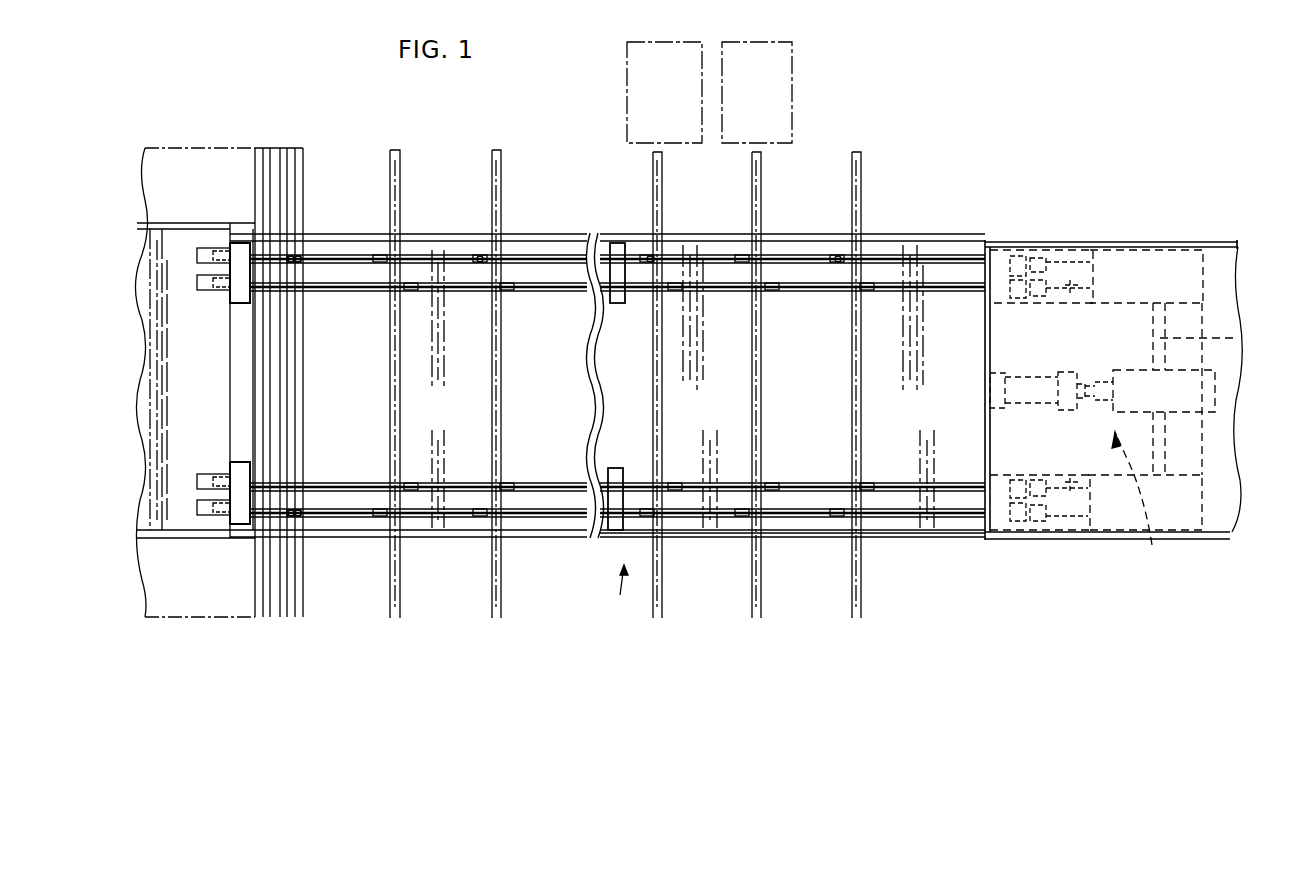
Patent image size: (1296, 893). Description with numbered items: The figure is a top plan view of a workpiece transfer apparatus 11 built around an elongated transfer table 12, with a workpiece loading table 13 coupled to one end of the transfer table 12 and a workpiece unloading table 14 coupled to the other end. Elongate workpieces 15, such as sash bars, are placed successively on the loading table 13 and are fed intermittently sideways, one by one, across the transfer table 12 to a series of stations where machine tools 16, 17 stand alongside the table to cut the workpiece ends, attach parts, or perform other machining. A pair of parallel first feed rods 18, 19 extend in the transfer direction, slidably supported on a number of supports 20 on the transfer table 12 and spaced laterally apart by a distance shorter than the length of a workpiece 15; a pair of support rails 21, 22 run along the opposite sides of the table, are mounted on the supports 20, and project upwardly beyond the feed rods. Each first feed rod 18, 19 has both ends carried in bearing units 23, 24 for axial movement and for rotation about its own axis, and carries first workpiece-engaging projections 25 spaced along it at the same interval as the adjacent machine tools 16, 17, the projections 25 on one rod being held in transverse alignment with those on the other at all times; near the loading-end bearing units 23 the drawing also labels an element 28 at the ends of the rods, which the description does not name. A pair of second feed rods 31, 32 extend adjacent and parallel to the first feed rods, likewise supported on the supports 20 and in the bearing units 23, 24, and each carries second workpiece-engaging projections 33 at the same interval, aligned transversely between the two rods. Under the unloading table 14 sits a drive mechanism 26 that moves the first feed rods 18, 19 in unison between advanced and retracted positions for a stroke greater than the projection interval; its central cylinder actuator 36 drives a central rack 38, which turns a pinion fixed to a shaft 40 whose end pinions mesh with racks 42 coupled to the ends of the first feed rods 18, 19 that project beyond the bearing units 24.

The apparatus 11 is at (610, 596).
The transfer table 12 is at (524, 535).
The workpiece loading table 13 is at (140, 378).
The workpiece unloading table 14 is at (1142, 260).
The workpieces 15 is at (283, 158).
The machine tool 16 is at (630, 68).
The machine tool 17 is at (786, 76).
The first feed rod 18 is at (793, 256).
The first feed rod 19 is at (796, 520).
The supports 20 is at (618, 250).
The support rail 21 is at (690, 240).
The support rail 22 is at (680, 538).
The bearing unit 23 is at (237, 290).
The bearing unit 24 is at (998, 250).
The first workpiece-engaging projections 25 is at (480, 255).
The drive mechanism 26 is at (1144, 507).
The chain end link 28 is at (300, 256).
The second feed rod 31 is at (540, 288).
The second feed rod 32 is at (556, 480).
The second workpiece-engaging projections 33 is at (406, 291).
The central cylinder actuator 36 is at (1028, 380).
The central rack 38 is at (1097, 384).
The shaft 40 is at (1222, 337).
The racks 42 is at (1070, 262).